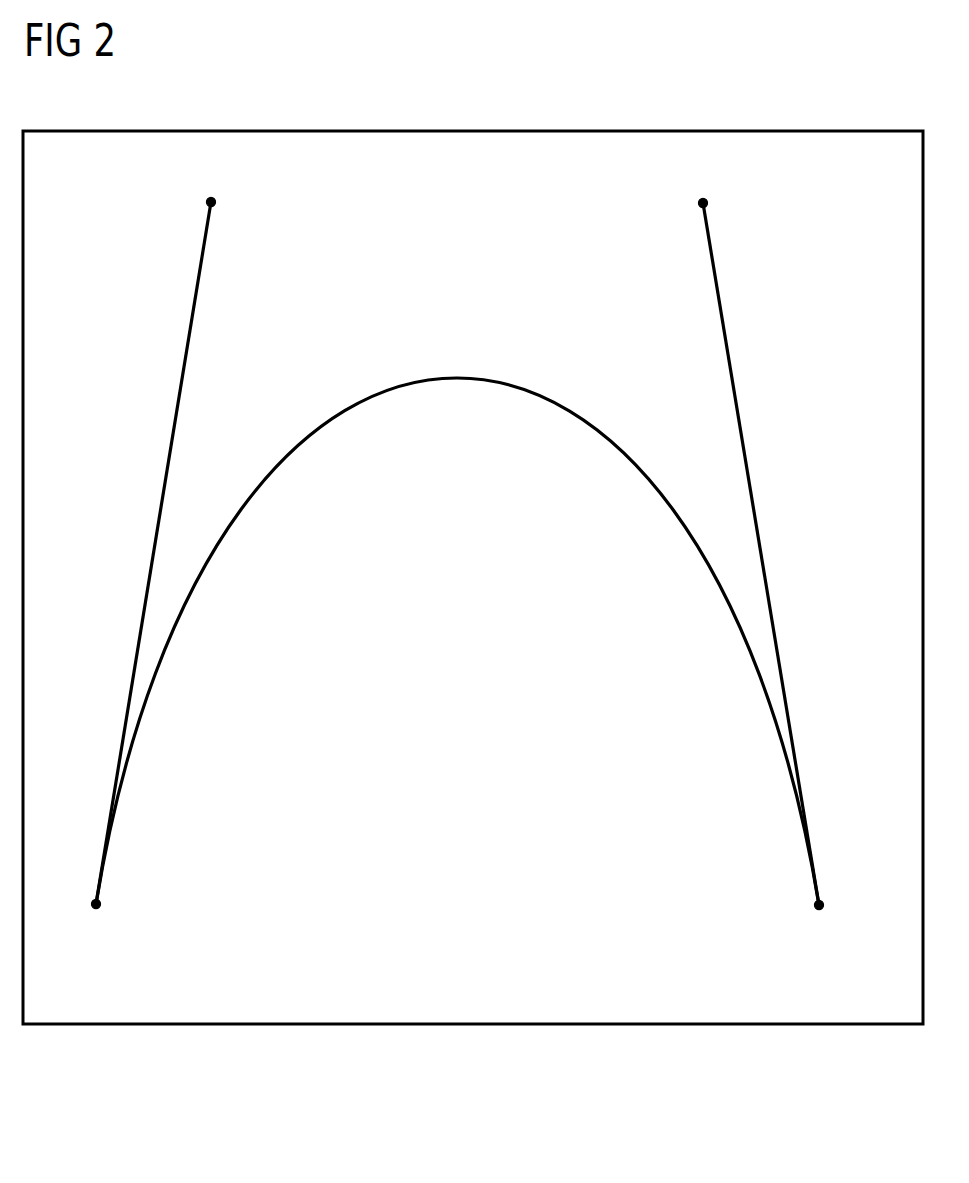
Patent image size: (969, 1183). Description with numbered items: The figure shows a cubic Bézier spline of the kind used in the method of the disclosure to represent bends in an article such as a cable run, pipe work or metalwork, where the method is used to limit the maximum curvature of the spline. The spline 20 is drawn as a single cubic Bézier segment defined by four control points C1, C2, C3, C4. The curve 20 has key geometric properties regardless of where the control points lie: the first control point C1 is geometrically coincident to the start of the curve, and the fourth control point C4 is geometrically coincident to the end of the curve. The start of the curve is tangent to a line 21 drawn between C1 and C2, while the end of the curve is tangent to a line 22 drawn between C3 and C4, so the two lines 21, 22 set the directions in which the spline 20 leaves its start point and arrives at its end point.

The spline 20 is at (456, 376).
The line between C1 and C2 21 is at (163, 491).
The line between C3 and C4 22 is at (753, 500).
The first control point C1 is at (92, 924).
The second control point C2 is at (213, 187).
The third control point C3 is at (705, 186).
The fourth control point C4 is at (827, 925).